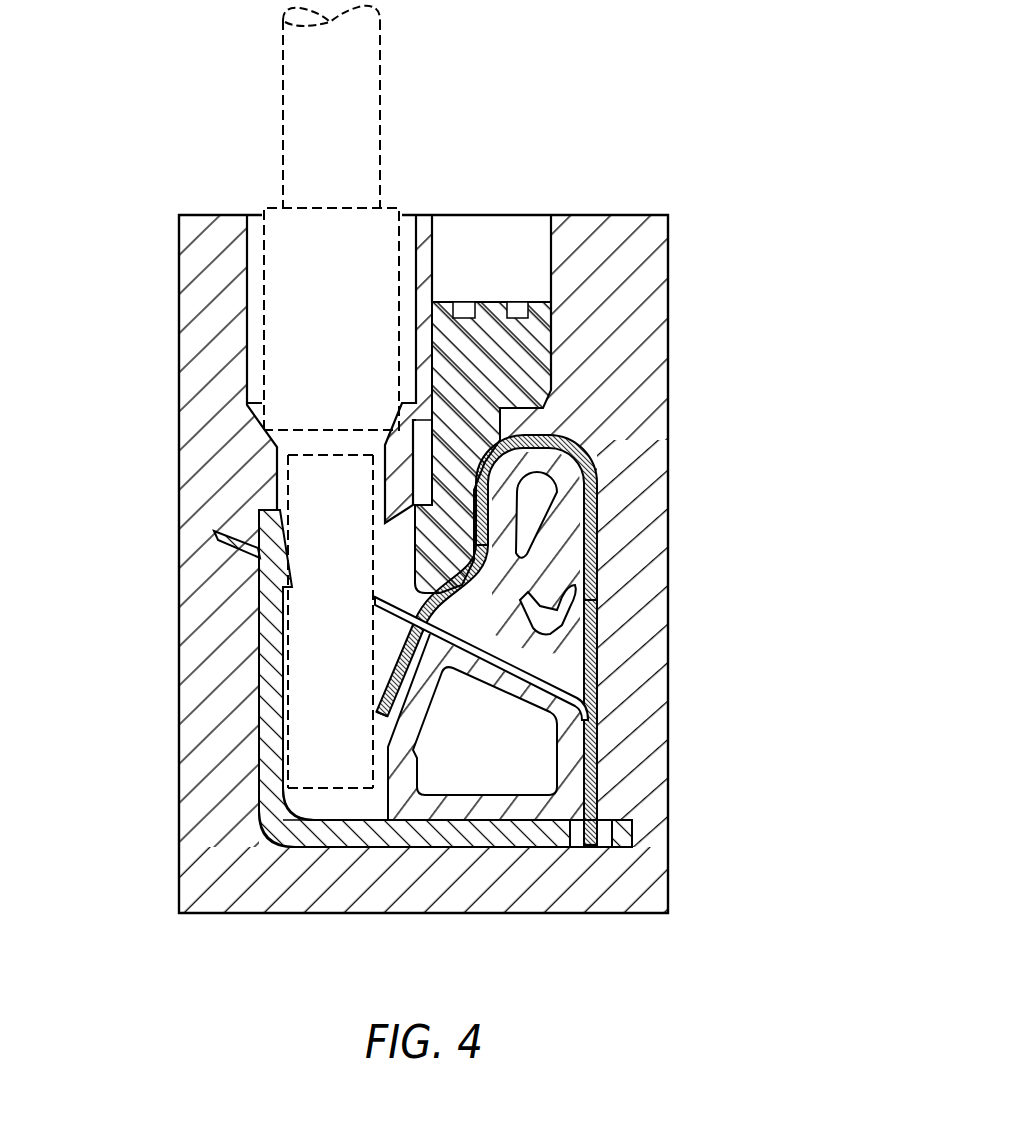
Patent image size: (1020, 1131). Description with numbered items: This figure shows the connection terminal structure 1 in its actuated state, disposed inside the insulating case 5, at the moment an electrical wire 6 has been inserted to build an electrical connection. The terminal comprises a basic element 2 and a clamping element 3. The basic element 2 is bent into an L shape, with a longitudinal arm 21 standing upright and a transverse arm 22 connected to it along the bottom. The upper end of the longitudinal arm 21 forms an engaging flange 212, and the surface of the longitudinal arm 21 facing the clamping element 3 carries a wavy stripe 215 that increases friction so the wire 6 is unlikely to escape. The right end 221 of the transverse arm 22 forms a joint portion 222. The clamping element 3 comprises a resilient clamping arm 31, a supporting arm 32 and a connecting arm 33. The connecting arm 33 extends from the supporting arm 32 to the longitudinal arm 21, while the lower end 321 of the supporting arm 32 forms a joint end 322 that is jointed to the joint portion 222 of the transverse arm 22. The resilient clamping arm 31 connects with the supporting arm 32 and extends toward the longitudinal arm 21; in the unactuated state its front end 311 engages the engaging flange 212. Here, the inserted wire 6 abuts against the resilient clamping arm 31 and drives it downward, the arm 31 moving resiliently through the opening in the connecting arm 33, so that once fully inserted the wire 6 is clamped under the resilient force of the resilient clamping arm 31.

The connection terminal structure 1 is at (428, 637).
The basic element 2 is at (428, 740).
The longitudinal arm 21 is at (277, 733).
The engaging flange 212 is at (258, 567).
The wavy stripe 215 is at (262, 795).
The transverse arm 22 is at (458, 847).
The right end 221 is at (620, 835).
The joint portion 222 is at (590, 848).
The clamping element 3 is at (423, 633).
The resilient clamping arm 31 is at (300, 632).
The front end 311 is at (250, 707).
The supporting arm 32 is at (653, 782).
The lower end 321 is at (600, 802).
The joint end 322 is at (587, 847).
The connecting arm 33 is at (375, 598).
The insulating case 5 is at (650, 302).
The electrical wire 6 is at (353, 110).